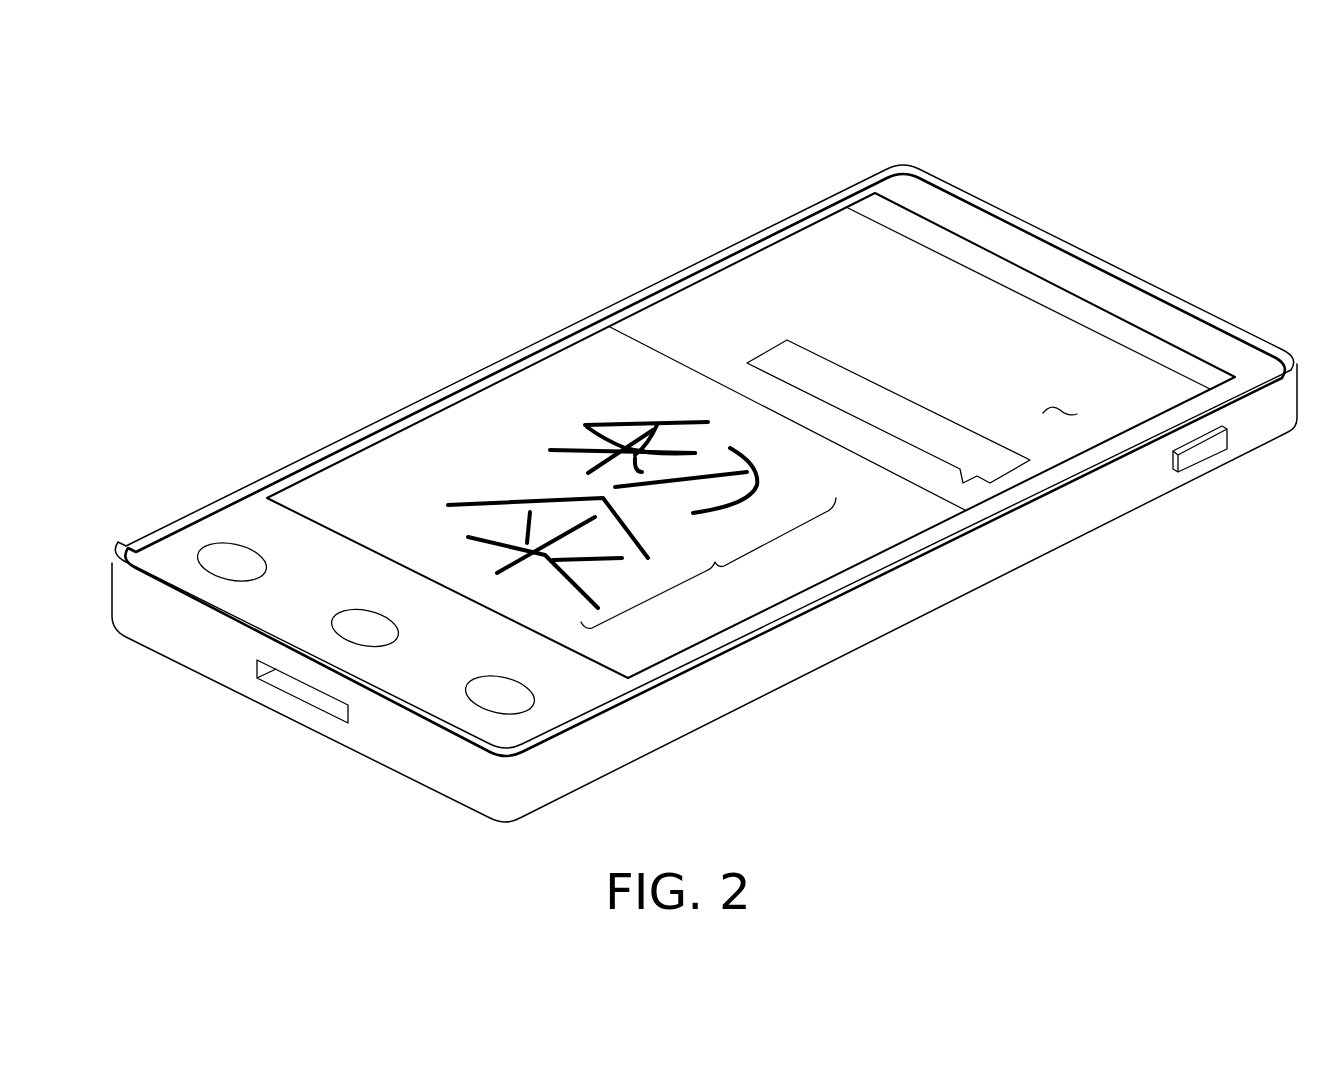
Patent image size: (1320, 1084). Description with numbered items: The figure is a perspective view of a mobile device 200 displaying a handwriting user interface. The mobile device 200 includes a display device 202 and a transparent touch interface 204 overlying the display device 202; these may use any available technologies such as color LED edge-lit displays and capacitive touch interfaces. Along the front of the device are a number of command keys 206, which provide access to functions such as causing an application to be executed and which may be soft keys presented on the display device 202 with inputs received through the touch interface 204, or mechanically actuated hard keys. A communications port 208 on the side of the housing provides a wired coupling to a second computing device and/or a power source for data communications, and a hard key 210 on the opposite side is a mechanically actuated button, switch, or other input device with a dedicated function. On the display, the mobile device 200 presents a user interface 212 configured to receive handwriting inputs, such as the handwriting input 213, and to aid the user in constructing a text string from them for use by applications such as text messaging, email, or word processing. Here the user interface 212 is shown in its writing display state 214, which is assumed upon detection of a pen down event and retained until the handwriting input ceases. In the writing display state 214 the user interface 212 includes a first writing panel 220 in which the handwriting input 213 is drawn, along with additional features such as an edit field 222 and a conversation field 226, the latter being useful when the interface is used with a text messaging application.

The mobile device 200 is at (985, 192).
The display device 202 is at (1097, 302).
The transparent touch interface 204 is at (1060, 412).
The command keys 206 is at (218, 569).
The communications port 208 is at (290, 685).
The hard key 210 is at (1202, 453).
The user interface 212 is at (564, 376).
The handwriting input 213 is at (642, 525).
The writing display state 214 is at (926, 725).
The first writing panel 220 is at (390, 460).
The edit field 222 is at (993, 468).
The conversation field 226 is at (797, 257).